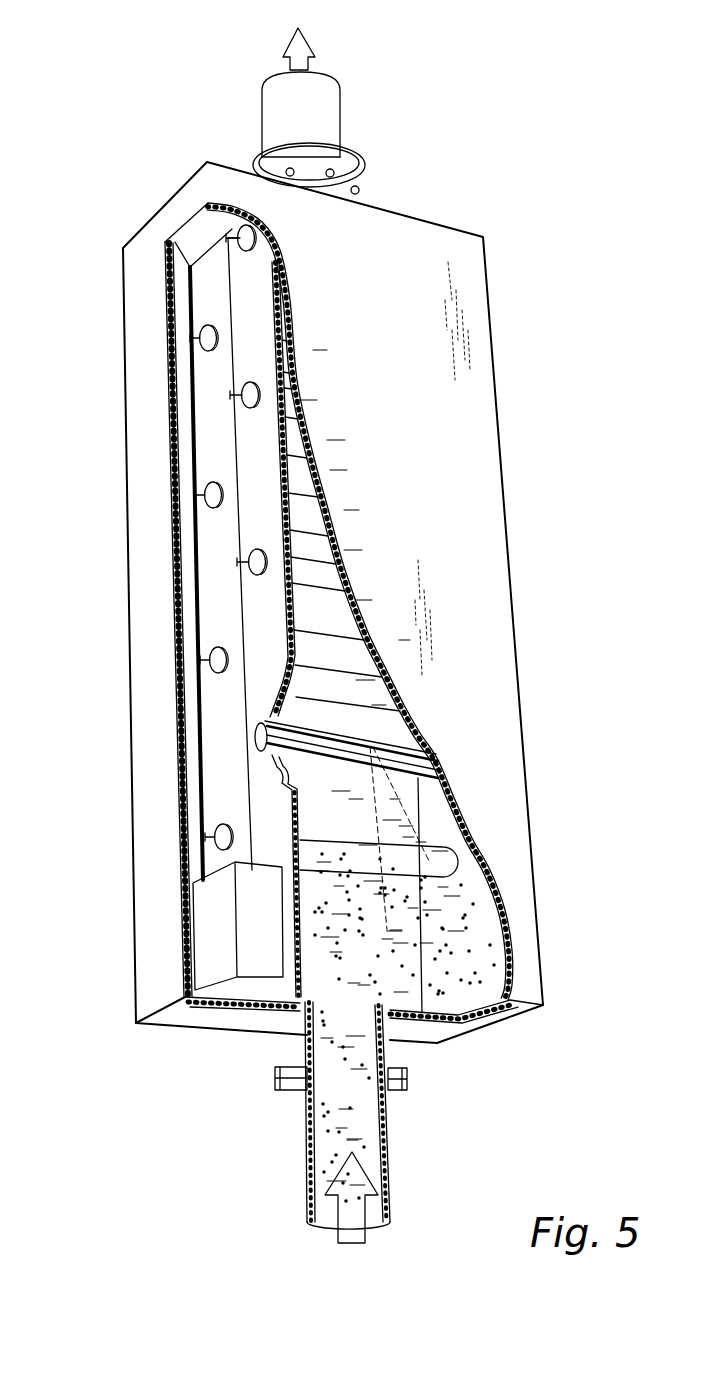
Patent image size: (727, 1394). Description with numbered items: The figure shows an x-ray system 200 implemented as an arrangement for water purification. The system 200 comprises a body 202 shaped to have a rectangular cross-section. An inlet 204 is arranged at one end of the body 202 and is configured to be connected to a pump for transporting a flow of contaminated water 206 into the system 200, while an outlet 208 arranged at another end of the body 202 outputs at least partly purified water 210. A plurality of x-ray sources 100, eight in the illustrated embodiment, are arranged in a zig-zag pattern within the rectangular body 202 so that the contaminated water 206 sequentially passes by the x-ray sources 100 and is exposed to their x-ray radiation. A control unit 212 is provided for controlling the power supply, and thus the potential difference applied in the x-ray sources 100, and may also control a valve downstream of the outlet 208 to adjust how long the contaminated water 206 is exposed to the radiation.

The x-ray source 100 is at (258, 748).
The x-ray system 200 is at (544, 149).
The body 202 is at (504, 497).
The inlet 204 is at (357, 1210).
The contaminated water 206 is at (393, 971).
The outlet 208 is at (338, 78).
The purified water 210 is at (310, 48).
The control unit 212 is at (220, 957).